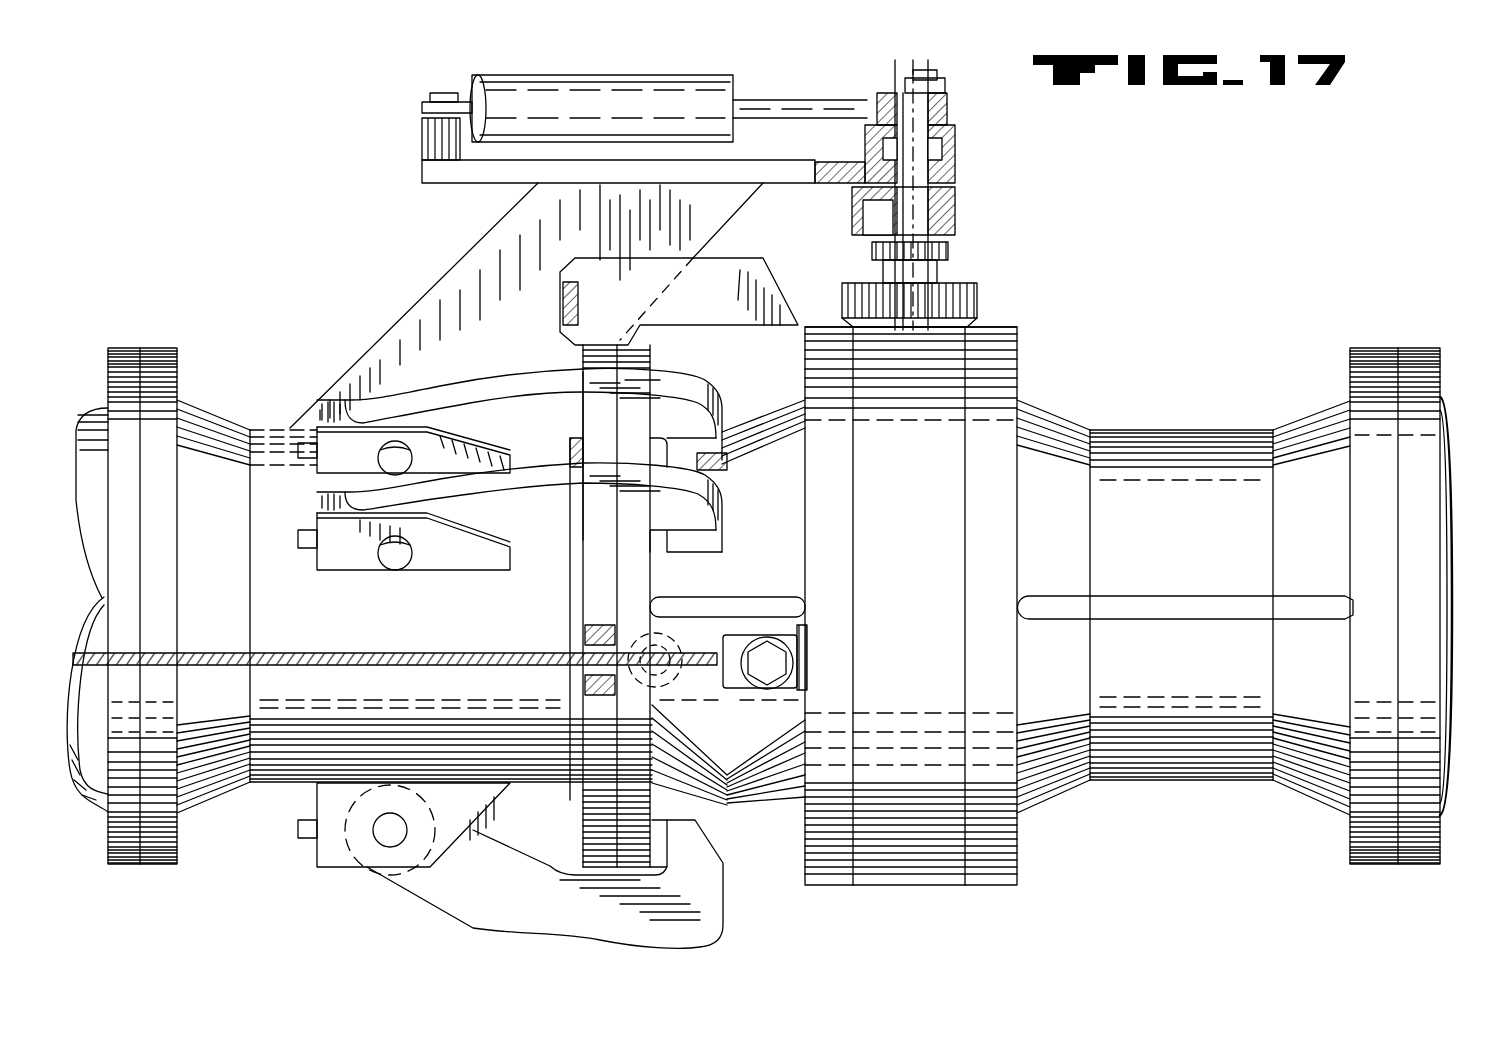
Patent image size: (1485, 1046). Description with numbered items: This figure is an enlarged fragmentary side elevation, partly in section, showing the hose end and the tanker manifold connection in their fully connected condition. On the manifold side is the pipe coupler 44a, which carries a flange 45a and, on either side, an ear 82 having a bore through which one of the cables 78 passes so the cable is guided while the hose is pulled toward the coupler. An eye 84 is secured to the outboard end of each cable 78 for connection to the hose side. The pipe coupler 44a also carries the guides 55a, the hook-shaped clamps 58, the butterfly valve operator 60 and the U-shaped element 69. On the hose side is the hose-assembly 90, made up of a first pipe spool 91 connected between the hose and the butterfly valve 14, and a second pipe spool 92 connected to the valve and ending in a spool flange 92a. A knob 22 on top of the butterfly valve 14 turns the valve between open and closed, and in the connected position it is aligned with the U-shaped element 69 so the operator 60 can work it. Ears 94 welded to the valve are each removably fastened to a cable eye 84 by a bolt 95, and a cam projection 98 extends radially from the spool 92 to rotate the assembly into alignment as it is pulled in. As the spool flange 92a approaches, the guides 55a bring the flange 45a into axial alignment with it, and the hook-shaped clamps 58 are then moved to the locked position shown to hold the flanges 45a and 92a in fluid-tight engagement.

The butterfly valve 14 is at (1005, 325).
The knob 22 is at (955, 220).
The pipe coupler 44a is at (310, 784).
The flange 45a is at (585, 603).
The guides 55a is at (722, 345).
The hook-shaped clamps 58 is at (720, 455).
The butterfly valve operator 60 is at (545, 68).
The U-shaped element 69 is at (852, 210).
The cables 78 is at (268, 653).
The ears 82 is at (585, 628).
The eye 84 is at (740, 630).
The hose-assembly 90 is at (1205, 368).
The first pipe spool 91 is at (1166, 430).
The second pipe spool 92 is at (772, 790).
The spool flange 92a is at (633, 582).
The ears 94 is at (785, 630).
The bolt 95 is at (780, 663).
The cam projection 98 is at (760, 597).